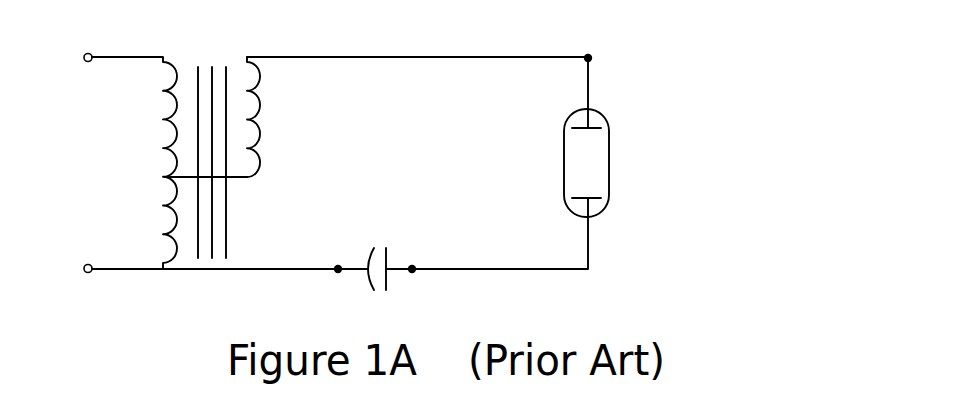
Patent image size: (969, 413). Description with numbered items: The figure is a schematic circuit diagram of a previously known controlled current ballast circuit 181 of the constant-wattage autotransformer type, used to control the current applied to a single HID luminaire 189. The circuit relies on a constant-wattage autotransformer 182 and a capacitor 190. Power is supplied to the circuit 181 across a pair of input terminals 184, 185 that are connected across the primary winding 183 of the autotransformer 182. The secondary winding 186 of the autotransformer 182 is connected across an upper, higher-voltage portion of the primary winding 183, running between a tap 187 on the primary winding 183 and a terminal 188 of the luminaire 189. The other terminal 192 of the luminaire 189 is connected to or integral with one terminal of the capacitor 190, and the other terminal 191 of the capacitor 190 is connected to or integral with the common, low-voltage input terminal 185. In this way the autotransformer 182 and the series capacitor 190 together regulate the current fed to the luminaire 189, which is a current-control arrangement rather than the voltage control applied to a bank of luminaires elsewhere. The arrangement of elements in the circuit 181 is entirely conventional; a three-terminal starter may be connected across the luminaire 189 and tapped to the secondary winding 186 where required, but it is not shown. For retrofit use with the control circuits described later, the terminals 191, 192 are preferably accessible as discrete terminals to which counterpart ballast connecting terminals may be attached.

The controlled current ballast circuit 181 is at (661, 83).
The constant-wattage autotransformer 182 is at (254, 211).
The primary winding 183 is at (172, 115).
The input terminal 184 is at (88, 74).
The input terminal 185 is at (115, 251).
The secondary winding 186 is at (262, 137).
The tap 187 is at (166, 177).
The terminal 188 is at (588, 55).
The HID luminaire 189 is at (563, 155).
The capacitor 190 is at (377, 247).
The terminal 191 is at (338, 266).
The terminal 192 is at (412, 266).